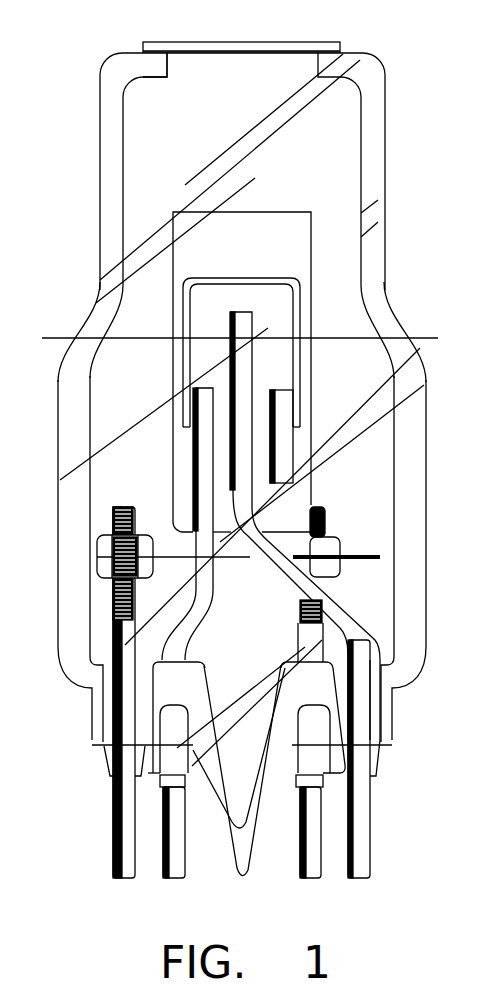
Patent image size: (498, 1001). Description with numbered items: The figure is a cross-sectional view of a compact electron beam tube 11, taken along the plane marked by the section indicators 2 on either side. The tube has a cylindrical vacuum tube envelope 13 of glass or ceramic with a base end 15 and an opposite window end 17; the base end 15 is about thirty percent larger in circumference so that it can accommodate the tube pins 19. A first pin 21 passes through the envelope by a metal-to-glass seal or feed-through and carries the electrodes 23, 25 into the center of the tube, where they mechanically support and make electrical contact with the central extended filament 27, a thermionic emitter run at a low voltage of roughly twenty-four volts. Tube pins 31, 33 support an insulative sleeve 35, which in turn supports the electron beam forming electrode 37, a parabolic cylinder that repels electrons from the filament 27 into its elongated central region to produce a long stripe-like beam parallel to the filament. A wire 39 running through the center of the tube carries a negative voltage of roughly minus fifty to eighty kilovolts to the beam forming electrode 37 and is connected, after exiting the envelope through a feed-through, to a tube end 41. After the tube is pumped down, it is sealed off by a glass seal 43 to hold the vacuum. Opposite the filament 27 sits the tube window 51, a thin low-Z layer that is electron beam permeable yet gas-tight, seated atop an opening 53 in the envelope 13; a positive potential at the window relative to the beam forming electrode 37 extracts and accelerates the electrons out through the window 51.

The section line 2- 2 is at (42, 338).
The electron beam tube 11 is at (402, 153).
The vacuum tube envelope 13 is at (388, 288).
The base end 15 is at (395, 673).
The window end 17 is at (366, 72).
The tube pins 19 is at (85, 835).
The first pin 21 is at (174, 879).
The electrode 23 is at (195, 607).
The electrode 25 is at (283, 458).
The central extended filament 27 is at (204, 272).
The tube pin 31 is at (125, 879).
The tube pin 33 is at (310, 879).
The insulative sleeve 35 is at (312, 407).
The electron beam forming electrode 37 is at (240, 227).
The wire 39 is at (358, 651).
The tube end 41 is at (360, 879).
The glass seal 43 is at (240, 879).
The tube window 51 is at (231, 42).
The opening 53 is at (168, 63).